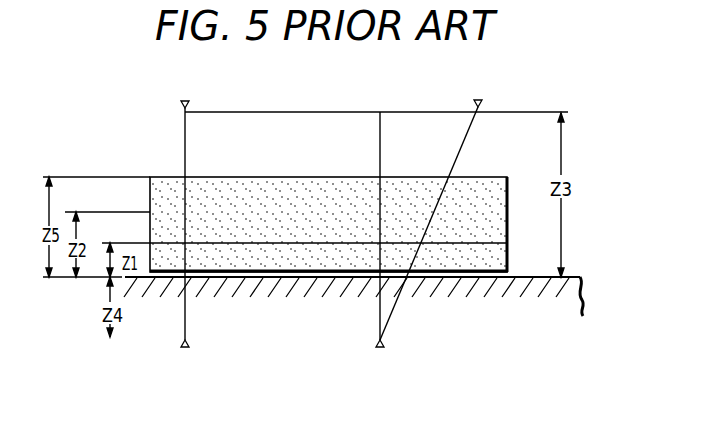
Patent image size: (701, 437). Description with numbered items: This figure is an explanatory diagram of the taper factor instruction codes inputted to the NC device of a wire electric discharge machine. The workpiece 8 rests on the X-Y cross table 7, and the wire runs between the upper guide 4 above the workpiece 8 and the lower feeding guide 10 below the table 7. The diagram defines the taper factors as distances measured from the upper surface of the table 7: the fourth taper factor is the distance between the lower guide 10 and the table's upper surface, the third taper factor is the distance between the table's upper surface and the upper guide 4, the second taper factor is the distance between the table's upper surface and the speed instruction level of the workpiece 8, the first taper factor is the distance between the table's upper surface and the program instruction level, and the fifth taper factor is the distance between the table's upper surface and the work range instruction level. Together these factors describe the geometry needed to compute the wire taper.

The upper guide 4 is at (189, 101).
The X-Y cross table 7 is at (537, 277).
The workpiece 8 is at (248, 184).
The lower feeding guide 10 is at (187, 348).